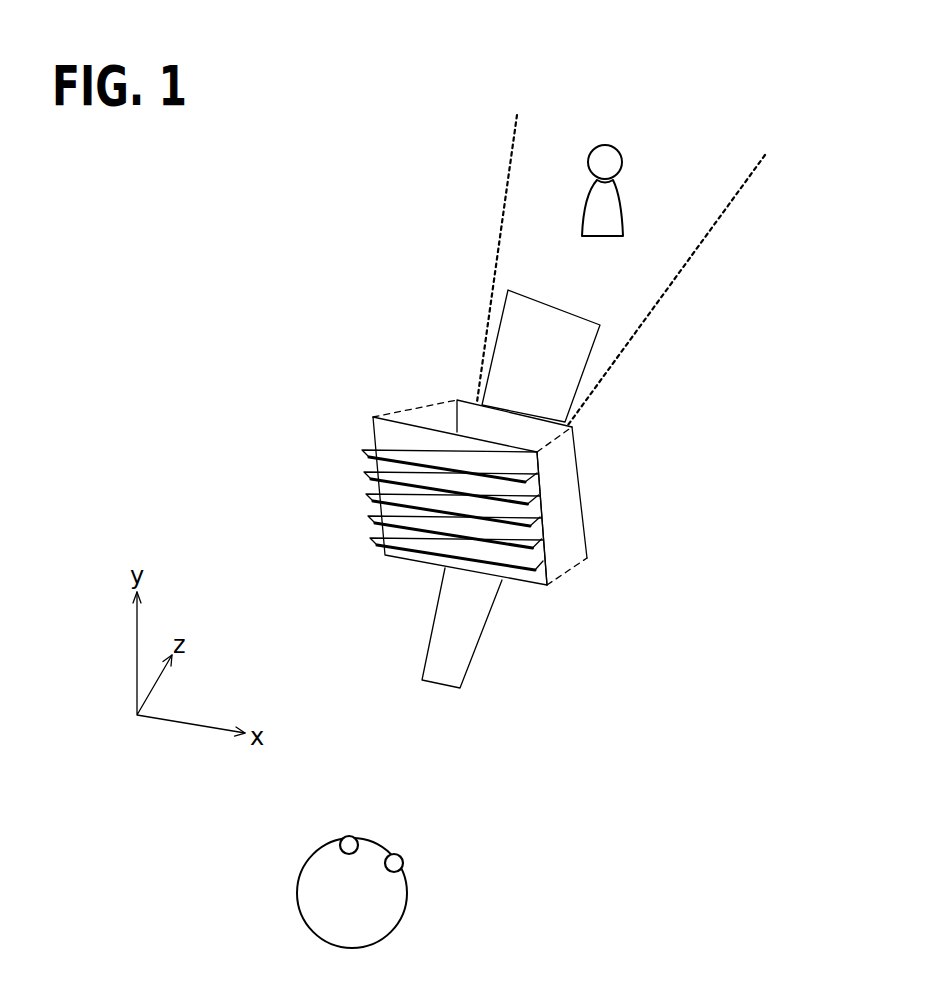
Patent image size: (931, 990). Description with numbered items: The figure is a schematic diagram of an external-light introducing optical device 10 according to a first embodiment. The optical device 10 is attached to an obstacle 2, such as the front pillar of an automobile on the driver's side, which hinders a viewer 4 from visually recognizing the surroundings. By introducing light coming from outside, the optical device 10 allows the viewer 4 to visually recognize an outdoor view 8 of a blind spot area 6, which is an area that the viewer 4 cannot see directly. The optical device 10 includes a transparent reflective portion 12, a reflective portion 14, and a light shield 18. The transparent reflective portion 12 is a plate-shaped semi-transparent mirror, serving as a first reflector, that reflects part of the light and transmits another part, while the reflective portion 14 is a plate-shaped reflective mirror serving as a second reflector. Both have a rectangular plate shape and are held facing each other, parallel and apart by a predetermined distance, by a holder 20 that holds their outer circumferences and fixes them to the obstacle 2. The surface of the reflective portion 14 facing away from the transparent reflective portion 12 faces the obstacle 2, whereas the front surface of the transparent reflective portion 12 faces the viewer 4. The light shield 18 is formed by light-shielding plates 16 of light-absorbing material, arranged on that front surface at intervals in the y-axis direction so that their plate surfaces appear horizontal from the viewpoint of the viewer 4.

The obstacle 2 is at (570, 357).
The viewer 4 is at (427, 919).
The blind spot area 6 is at (522, 250).
The outdoor view 8 is at (613, 203).
The optical device 10 is at (476, 496).
The transparent reflective portion 12 is at (537, 580).
The reflective portion 14 is at (565, 455).
The light-shielding plates 16 is at (544, 546).
The light shield 18 is at (474, 507).
The holder 20 is at (393, 410).